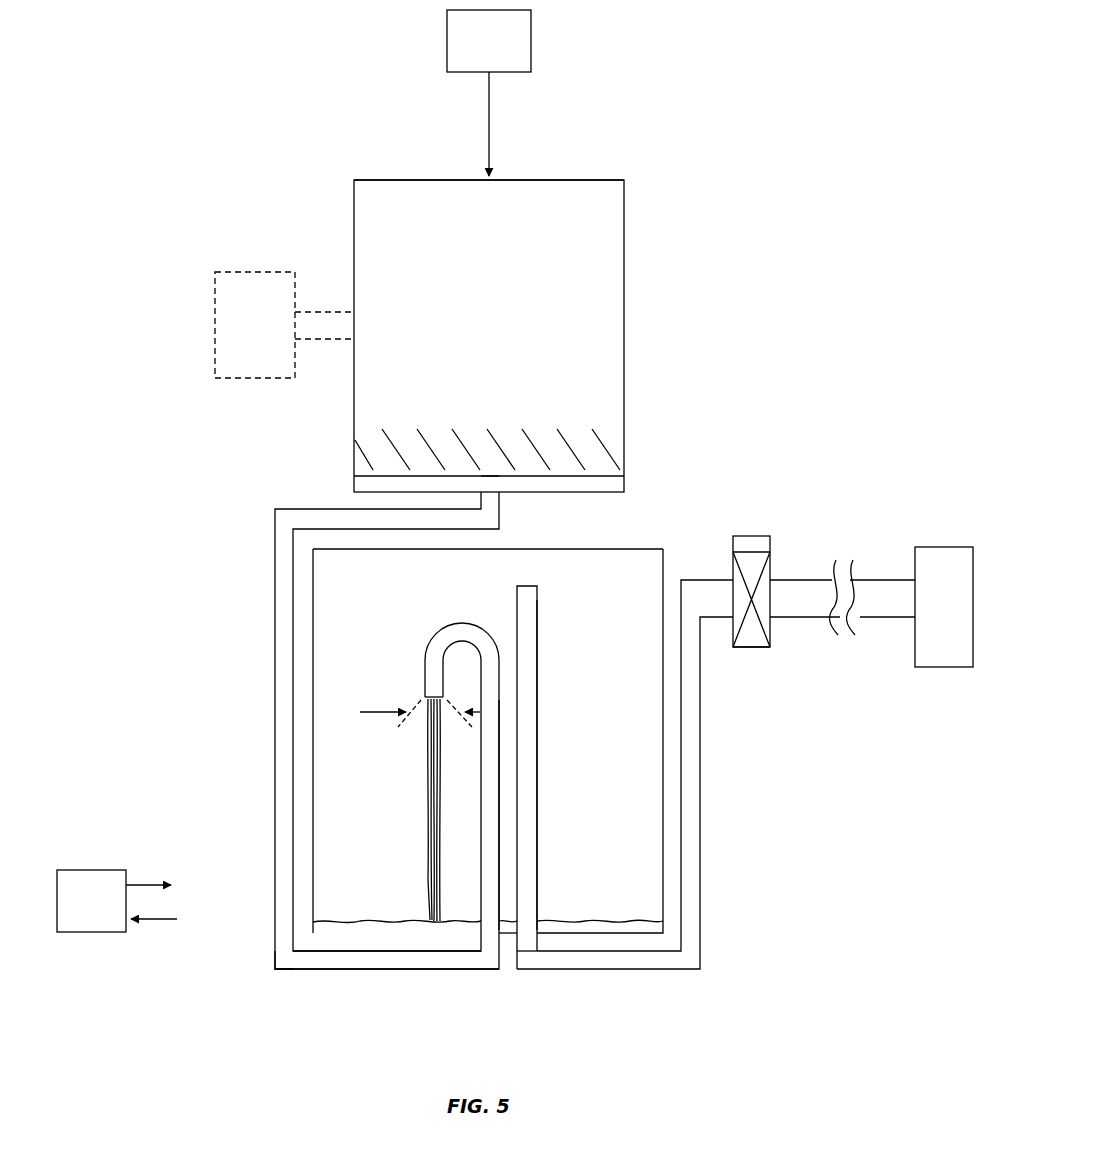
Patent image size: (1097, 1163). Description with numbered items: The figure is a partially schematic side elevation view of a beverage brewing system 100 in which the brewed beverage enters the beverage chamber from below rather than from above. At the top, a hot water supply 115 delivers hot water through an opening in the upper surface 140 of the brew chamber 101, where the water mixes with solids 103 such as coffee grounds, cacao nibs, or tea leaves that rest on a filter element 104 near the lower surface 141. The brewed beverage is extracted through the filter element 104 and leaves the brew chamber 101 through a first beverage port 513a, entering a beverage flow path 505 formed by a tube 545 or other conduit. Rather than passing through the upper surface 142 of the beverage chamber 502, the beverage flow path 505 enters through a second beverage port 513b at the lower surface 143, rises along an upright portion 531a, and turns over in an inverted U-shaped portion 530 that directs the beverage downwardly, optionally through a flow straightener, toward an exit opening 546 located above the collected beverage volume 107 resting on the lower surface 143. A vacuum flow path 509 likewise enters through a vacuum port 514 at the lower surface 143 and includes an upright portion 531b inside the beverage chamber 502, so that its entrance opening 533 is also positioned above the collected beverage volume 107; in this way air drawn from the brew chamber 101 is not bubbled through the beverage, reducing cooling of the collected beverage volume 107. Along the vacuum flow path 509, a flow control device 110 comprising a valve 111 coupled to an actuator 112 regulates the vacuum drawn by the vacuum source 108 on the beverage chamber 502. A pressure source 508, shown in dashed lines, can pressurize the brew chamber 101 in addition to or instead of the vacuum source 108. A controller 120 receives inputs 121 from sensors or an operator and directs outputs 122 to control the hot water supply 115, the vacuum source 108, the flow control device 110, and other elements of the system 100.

The beverage brewing system 100 is at (846, 85).
The hot water supply 115 is at (531, 40).
The upper surface 140 is at (380, 180).
The brew chamber 101 is at (624, 327).
The filter element 104 is at (624, 483).
The solids 103 is at (440, 445).
The first beverage port 513a is at (493, 473).
The pressure source 508 is at (233, 270).
The lower surface 141 is at (360, 493).
The inverted portion 530 is at (455, 625).
The exit opening 546 is at (424, 703).
The beverage flow path 505 is at (275, 762).
The upper surface 142 is at (625, 549).
The beverage chamber 502 is at (663, 820).
The collected beverage volume 107 is at (607, 922).
The entrance opening 533 is at (526, 586).
The upright portion 531a is at (500, 812).
The upright portion 531b is at (537, 680).
The second beverage port 513b is at (489, 950).
The vacuum port 514 is at (527, 950).
The lower surface 143 is at (340, 954).
The tube 545 is at (284, 980).
The vacuum flow path 509 is at (705, 580).
The actuator 112 is at (770, 542).
The valve 111 is at (748, 648).
The flow control device 110 is at (821, 660).
The vacuum source 108 is at (948, 547).
The controller 120 is at (97, 870).
The outputs 122 is at (150, 880).
The inputs 121 is at (157, 925).